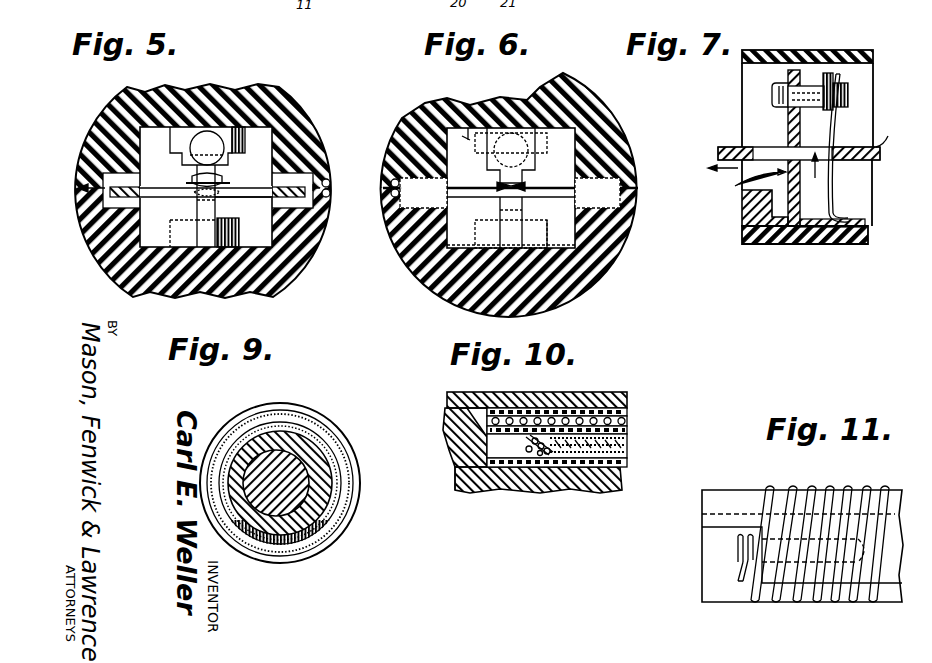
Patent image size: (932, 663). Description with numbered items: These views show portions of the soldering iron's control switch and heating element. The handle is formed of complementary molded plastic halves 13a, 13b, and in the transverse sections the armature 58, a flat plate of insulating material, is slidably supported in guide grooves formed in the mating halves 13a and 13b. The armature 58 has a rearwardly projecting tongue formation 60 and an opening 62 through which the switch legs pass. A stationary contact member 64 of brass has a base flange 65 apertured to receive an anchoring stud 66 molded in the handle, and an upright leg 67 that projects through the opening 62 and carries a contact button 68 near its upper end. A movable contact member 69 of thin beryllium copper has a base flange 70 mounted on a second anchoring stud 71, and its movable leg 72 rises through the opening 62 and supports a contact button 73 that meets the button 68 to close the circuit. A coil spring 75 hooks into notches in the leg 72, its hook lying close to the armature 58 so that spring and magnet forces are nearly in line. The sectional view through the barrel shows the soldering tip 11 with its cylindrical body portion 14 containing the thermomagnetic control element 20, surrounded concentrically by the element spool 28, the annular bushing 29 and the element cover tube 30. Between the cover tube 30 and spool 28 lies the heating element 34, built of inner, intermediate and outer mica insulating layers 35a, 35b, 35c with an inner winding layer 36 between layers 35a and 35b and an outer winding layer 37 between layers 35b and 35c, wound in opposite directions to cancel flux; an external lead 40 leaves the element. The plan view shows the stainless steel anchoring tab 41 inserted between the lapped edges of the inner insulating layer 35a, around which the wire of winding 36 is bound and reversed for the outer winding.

In FIG. 5, the handle half 13a is at (272, 95).
In FIG. 6, the handle half 13a is at (420, 103).
In FIG. 5, the handle half 13b is at (283, 262).
In FIG. 6, the handle half 13b is at (440, 290).
In FIG. 5, the armature 58 is at (128, 188).
In FIG. 6, the armature 58 is at (456, 188).
In FIG. 7, the armature 58 is at (728, 147).
In FIG. 5, the external lead 40 is at (330, 195).
In FIG. 5, the contact button 73 is at (196, 144).
In FIG. 6, the contact button 73 is at (535, 162).
In FIG. 7, the contact button 73 is at (834, 74).
In FIG. 5, the coil spring 75 is at (220, 184).
In FIG. 6, the coil spring 75 is at (500, 186).
In FIG. 7, the coil spring 75 is at (870, 138).
In FIG. 5, the movable leg 72 is at (197, 201).
In FIG. 6, the movable leg 72 is at (510, 210).
In FIG. 7, the movable leg 72 is at (834, 181).
In FIG. 5, the anchoring stud 71 is at (178, 224).
In FIG. 6, the anchoring stud 71 is at (547, 238).
In FIG. 5, the opening 62 is at (265, 200).
In FIG. 7, the opening 62 is at (812, 180).
In FIG. 6, the stationary contact member 64 is at (468, 130).
In FIG. 7, the stationary contact member 64 is at (754, 148).
In FIG. 6, the base flange 70 is at (470, 248).
In FIG. 7, the base flange 70 is at (866, 222).
In FIG. 7, the contact button 68 is at (810, 86).
In FIG. 7, the upright leg 67 is at (786, 84).
In FIG. 7, the tongue formation 60 is at (880, 153).
In FIG. 7, the anchoring stud 66 is at (746, 207).
In FIG. 7, the base flange 65 is at (778, 244).
In FIG. 7, the movable contact member 69 is at (838, 206).
In FIG. 9, the element cover tube 30 is at (248, 412).
In FIG. 10, the element cover tube 30 is at (586, 392).
In FIG. 9, the annular bushing 29 is at (296, 416).
In FIG. 10, the annular bushing 29 is at (450, 430).
In FIG. 9, the soldering tip 11 is at (306, 431).
In FIG. 9, the cylindrical body portion 14 is at (320, 446).
In FIG. 9, the thermomagnetic control element 20 is at (312, 470).
In FIG. 9, the element spool 28 is at (334, 478).
In FIG. 10, the element spool 28 is at (520, 488).
In FIG. 10, the inner insulating layer 35a is at (628, 461).
In FIG. 11, the inner insulating layer 35a is at (706, 527).
In FIG. 10, the intermediate insulating layer 35b is at (628, 430).
In FIG. 10, the outer insulating layer 35c is at (628, 411).
In FIG. 10, the outer winding layer 37 is at (628, 421).
In FIG. 10, the inner winding layer 36 is at (628, 446).
In FIG. 11, the inner winding layer 36 is at (776, 494).
In FIG. 10, the anchoring tab 41 is at (528, 444).
In FIG. 11, the anchoring tab 41 is at (738, 552).
In FIG. 10, the heating element 34 is at (456, 490).